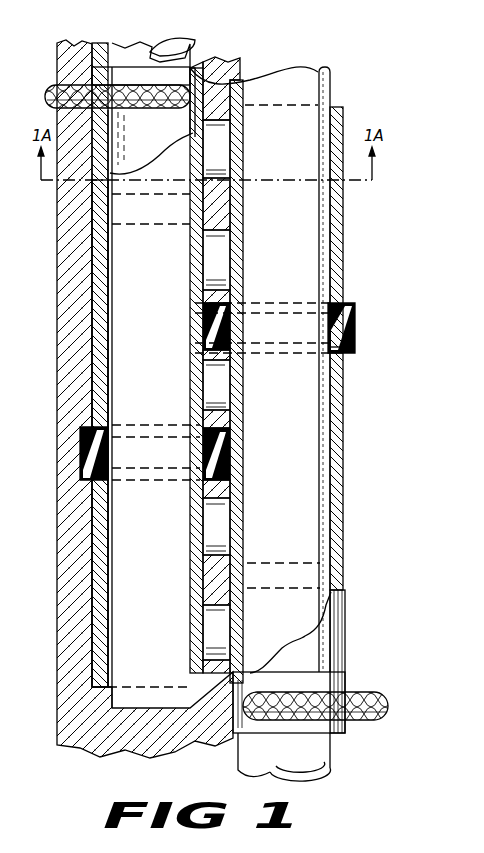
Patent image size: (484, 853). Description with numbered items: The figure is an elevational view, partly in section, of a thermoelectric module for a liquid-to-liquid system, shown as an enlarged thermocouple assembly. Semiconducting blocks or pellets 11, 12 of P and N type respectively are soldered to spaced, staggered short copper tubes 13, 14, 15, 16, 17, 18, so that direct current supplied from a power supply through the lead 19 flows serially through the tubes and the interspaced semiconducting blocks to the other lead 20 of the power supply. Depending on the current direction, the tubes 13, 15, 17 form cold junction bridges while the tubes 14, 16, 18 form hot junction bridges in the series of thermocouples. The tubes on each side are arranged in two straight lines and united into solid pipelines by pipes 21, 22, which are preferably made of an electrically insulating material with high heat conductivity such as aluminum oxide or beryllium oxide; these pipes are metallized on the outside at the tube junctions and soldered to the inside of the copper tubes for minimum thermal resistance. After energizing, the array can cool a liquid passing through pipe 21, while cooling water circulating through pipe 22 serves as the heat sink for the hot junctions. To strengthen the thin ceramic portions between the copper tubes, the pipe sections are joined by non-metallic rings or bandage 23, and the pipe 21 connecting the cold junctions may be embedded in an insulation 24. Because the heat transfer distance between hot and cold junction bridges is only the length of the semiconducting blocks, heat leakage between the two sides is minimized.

The semiconducting block 11 is at (213, 148).
The semiconducting block 12 is at (215, 263).
The copper tube 13 is at (150, 148).
The copper tube 14 is at (333, 213).
The copper tube 15 is at (96, 315).
The copper tube 16 is at (333, 435).
The copper tube 17 is at (96, 563).
The copper tube 18 is at (323, 635).
The lead 19 is at (70, 88).
The lead 20 is at (358, 705).
The pipe 21 is at (143, 62).
The pipe 22 is at (323, 100).
The non-metallic rings or bandage 23 is at (350, 335).
The insulation 24 is at (76, 387).